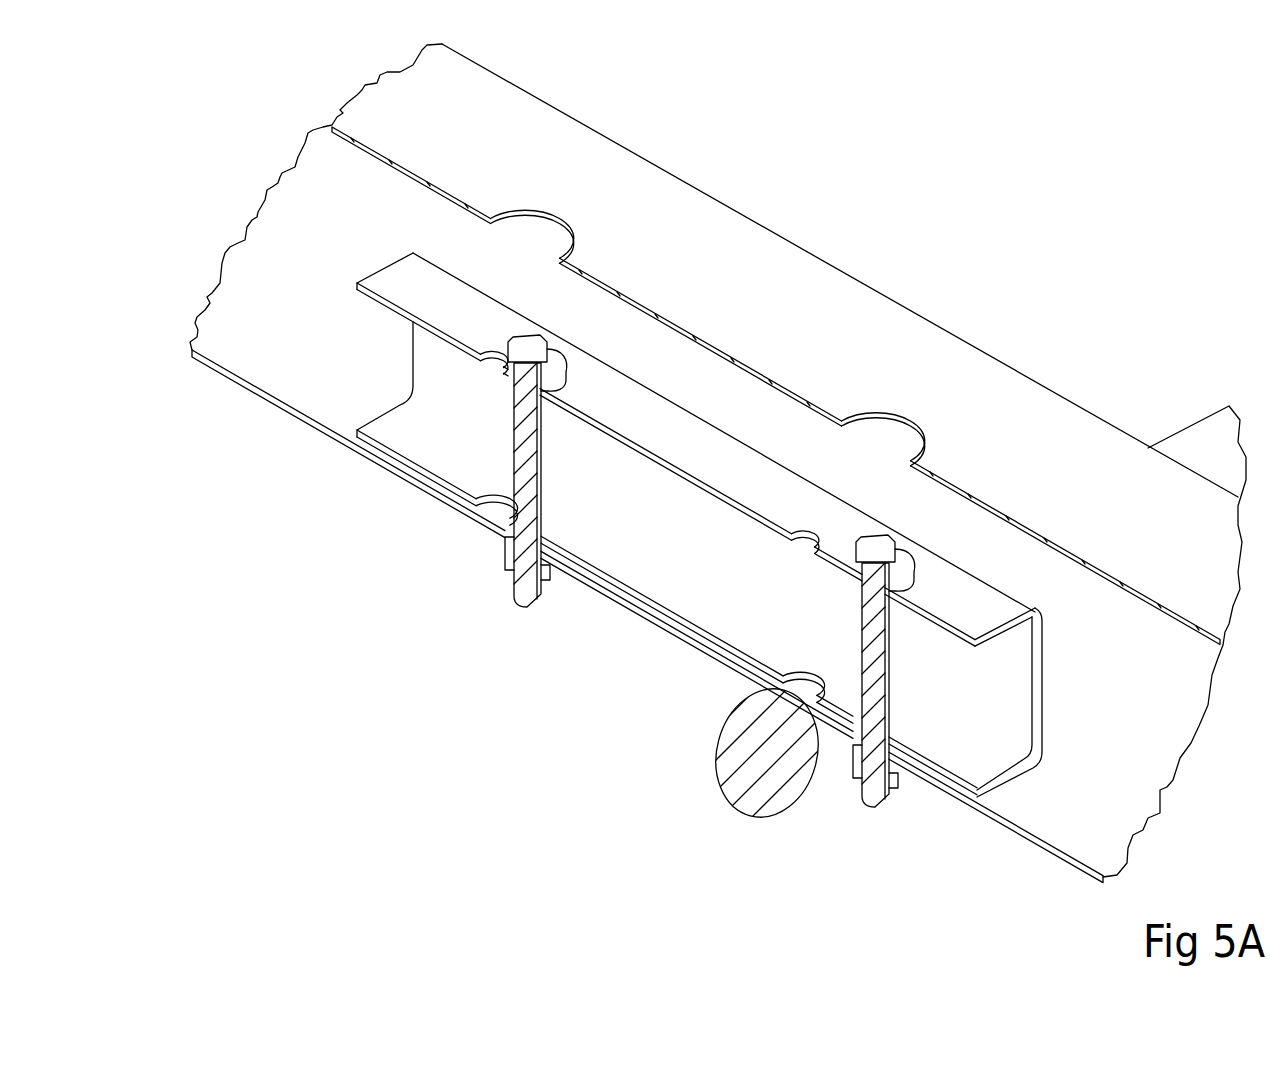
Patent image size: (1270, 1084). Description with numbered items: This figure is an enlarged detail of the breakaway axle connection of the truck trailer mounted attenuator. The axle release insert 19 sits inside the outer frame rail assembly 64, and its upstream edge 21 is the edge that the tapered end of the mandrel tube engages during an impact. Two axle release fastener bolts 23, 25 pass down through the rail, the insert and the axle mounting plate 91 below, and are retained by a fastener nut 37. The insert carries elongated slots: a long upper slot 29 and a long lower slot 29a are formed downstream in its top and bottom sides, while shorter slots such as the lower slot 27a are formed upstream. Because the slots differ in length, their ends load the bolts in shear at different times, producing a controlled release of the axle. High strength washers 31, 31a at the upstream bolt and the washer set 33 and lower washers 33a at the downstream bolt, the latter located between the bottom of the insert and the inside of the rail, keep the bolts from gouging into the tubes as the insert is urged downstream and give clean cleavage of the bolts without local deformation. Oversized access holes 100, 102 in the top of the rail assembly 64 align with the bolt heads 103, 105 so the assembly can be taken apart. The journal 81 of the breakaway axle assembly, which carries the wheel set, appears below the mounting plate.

The axle release insert 19 is at (655, 418).
The upstream edge 21 is at (383, 412).
The axle release fastener bolt 23 is at (522, 451).
The axle release fastener bolt 25 is at (885, 680).
The lower elongated slot 27a is at (493, 505).
The upper elongated slot 29 is at (648, 636).
The lower elongated slot 29a is at (745, 677).
The high strength washer 31 is at (497, 355).
The high strength washer 31a is at (552, 547).
The high strength washer set 33 is at (907, 570).
The high strength washers 33a is at (905, 757).
The fastener nut 37 is at (565, 606).
The rail assembly 64 is at (790, 287).
The journal 81 is at (785, 772).
The axle mounting plate 91 is at (473, 522).
The oversized access hole 100 is at (530, 213).
The oversized access hole 102 is at (880, 410).
The bolt head 103 is at (523, 350).
The bolt head 105 is at (885, 545).